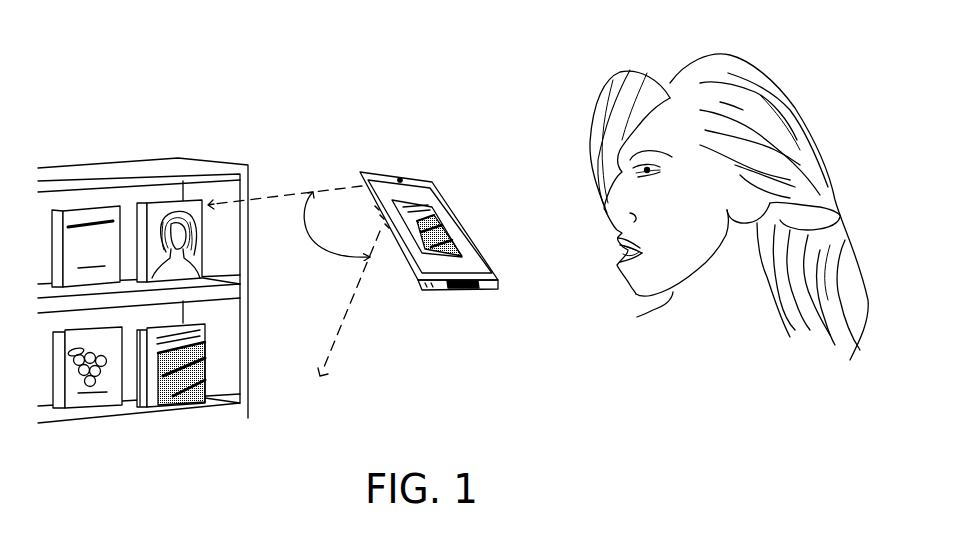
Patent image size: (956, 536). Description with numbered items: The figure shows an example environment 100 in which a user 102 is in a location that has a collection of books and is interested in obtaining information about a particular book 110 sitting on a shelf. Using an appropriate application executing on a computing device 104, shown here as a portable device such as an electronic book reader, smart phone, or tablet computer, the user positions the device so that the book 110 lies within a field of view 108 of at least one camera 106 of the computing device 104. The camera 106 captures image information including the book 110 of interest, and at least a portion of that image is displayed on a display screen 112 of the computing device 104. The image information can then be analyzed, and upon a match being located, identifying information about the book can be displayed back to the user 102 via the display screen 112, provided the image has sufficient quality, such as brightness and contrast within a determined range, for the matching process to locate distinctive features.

The environment 100 is at (81, 95).
The user 102 is at (577, 123).
The computing device 104 is at (428, 286).
The camera 106 is at (400, 180).
The field of view 108 is at (294, 281).
The book 110 is at (187, 407).
The display screen 112 is at (453, 221).